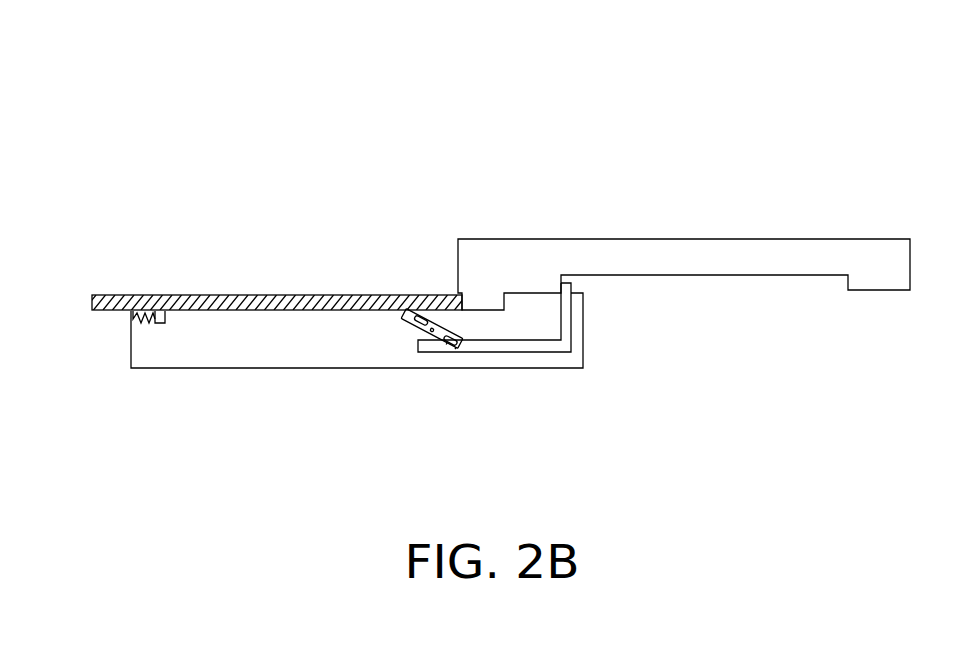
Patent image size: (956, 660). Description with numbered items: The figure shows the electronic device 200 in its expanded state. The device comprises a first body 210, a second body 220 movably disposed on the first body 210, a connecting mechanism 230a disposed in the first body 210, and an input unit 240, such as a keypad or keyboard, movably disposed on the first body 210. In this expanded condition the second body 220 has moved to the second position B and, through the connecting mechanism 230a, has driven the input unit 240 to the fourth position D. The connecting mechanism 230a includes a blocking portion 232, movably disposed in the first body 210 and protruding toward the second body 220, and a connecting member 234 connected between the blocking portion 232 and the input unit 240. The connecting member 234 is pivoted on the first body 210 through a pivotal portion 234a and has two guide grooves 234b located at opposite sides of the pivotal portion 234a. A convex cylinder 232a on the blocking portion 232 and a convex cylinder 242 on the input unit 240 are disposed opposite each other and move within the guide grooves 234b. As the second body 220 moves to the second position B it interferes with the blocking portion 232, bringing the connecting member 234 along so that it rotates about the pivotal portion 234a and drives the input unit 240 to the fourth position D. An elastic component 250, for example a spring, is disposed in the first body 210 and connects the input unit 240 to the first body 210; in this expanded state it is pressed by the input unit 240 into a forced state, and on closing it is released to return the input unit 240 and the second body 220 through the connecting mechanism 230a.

The electronic device 200 is at (845, 450).
The first body 210 is at (262, 368).
The second body 220 is at (683, 239).
The connecting mechanism 230a is at (413, 168).
The blocking portion 232 is at (488, 340).
The convex cylinder 232a is at (451, 340).
The connecting member 234 is at (443, 327).
The pivotal portion 234a is at (429, 332).
The guide grooves 234b is at (441, 345).
The input unit 240 is at (262, 295).
The convex cylinder 242 is at (403, 316).
The elastic component 250 is at (138, 323).
The fourth position D is at (93, 303).
The second position B is at (910, 258).